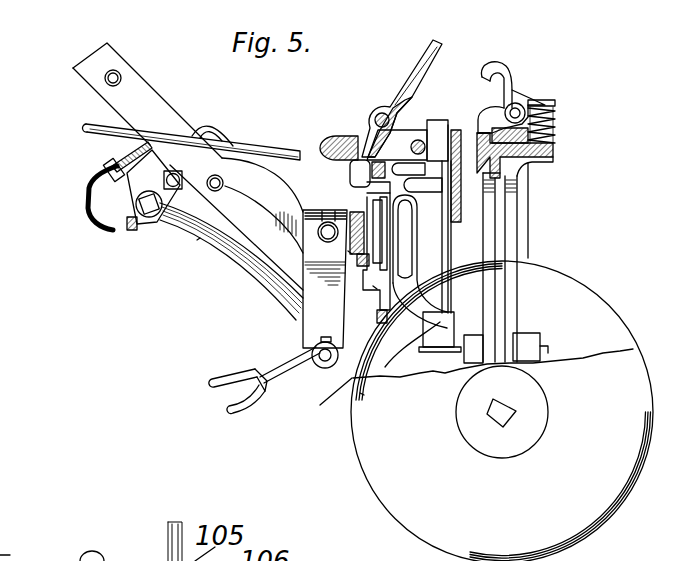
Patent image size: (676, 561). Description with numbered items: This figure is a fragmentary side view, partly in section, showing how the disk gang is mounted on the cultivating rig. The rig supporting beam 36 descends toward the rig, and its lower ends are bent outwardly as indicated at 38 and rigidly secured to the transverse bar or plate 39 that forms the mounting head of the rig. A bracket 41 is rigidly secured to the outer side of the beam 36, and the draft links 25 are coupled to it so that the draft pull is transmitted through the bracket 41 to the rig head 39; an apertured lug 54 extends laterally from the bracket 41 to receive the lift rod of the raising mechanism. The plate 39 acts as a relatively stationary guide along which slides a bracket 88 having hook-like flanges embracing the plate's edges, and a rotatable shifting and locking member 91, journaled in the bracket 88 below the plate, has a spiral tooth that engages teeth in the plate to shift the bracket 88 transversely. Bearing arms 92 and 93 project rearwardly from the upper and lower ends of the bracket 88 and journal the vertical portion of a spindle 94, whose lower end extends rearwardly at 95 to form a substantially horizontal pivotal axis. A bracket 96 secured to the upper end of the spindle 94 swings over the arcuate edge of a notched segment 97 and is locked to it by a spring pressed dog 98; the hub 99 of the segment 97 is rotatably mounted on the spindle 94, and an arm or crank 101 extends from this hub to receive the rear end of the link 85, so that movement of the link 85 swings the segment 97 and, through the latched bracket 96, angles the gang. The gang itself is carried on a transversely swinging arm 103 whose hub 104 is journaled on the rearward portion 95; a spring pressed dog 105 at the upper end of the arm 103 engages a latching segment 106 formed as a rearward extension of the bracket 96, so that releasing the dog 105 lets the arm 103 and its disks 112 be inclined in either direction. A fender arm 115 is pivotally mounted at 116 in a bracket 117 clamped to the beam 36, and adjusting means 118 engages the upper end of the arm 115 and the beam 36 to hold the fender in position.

The rig supporting beam 36 is at (126, 60).
The bracket 117 is at (217, 108).
The link 85 is at (85, 128).
The adjusting means 118 is at (110, 173).
The pivotal mounting 116 is at (147, 216).
The arm 115 is at (197, 240).
The bracket 41 is at (303, 256).
The outwardly bent lower ends 38 is at (350, 252).
The transverse bar or plate 39 is at (375, 287).
The bracket 88 is at (380, 300).
The shifting and locking member 91 is at (310, 357).
The draft links 25 is at (230, 385).
The disks 112 is at (360, 393).
The apertured lug 54 is at (303, 211).
The notched segment 97 is at (370, 175).
The spring pressed dog 98 is at (363, 133).
The bracket 96 is at (410, 130).
The latching segment 106 is at (477, 134).
The spring pressed dog 105 is at (497, 110).
The hub 99 is at (463, 183).
The arm or crank 101 is at (517, 200).
The bearing arm 92 is at (462, 216).
The spindle 94 is at (447, 267).
The bearing arm 93 is at (453, 317).
The transversely swinging arm 103 is at (526, 251).
The hub 104 is at (533, 330).
The rearwardly extending portion 95 is at (557, 343).